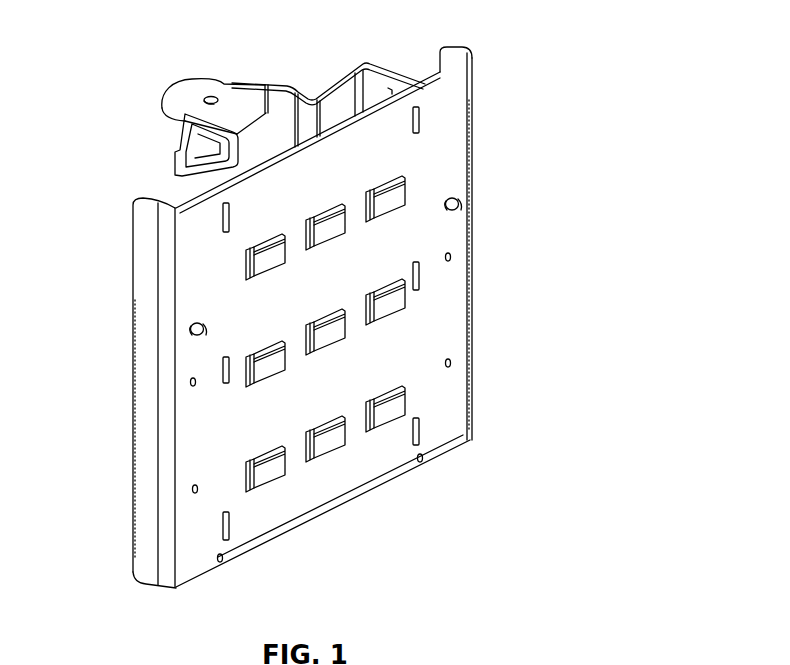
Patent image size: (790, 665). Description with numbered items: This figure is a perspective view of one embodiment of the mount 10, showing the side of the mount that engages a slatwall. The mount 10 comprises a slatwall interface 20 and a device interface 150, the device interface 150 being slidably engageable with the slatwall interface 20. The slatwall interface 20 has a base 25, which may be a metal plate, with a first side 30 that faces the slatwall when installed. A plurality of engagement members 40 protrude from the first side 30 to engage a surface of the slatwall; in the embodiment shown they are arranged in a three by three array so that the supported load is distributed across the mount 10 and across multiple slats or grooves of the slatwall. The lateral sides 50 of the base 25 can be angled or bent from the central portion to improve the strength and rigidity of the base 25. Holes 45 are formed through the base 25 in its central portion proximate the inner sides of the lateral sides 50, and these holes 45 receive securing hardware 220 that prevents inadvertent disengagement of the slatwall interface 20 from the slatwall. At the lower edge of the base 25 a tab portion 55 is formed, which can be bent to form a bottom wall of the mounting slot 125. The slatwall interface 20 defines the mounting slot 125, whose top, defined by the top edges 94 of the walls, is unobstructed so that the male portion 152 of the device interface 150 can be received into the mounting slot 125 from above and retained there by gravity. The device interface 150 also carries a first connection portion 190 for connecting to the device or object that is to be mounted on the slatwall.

The mount 10 is at (602, 263).
The slatwall interface 20 is at (475, 458).
The base 25 is at (117, 215).
The first side 30 is at (448, 142).
The engagement members 40 is at (272, 368).
The holes 45 is at (205, 320).
The lateral sides 50 is at (143, 286).
The tab portion 55 is at (330, 505).
The top edges 94 is at (334, 77).
The mounting slot 125 is at (283, 128).
The device interface 150 is at (202, 64).
The male portion 152 is at (223, 163).
The first connection portion 190 is at (177, 97).
The securing hardware 220 is at (213, 332).